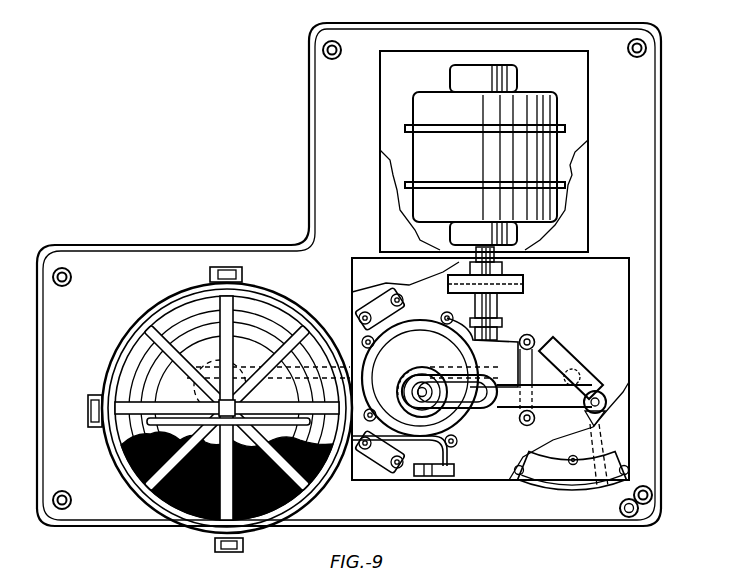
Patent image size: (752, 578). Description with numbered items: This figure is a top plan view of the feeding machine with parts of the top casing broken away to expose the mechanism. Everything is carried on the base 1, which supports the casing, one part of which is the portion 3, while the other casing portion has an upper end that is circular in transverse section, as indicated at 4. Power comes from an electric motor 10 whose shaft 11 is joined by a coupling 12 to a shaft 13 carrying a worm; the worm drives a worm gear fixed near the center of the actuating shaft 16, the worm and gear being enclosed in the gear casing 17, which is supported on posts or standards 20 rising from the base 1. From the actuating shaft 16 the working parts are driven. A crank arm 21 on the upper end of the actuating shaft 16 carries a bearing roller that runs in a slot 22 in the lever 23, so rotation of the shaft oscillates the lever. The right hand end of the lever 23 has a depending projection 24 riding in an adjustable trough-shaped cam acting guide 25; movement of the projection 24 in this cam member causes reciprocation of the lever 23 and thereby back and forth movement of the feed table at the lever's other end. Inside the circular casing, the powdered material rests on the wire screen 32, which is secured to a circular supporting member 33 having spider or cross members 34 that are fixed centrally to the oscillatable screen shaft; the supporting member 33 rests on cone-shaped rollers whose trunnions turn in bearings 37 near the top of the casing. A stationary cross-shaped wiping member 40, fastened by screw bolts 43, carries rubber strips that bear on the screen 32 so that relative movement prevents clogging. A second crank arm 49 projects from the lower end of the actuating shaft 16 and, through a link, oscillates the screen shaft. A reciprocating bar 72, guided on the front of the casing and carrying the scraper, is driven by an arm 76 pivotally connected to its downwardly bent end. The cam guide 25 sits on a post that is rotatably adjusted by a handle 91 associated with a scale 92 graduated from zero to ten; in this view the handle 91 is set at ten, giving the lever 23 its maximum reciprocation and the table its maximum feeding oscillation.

The base 1 is at (330, 178).
The casing portion 3 is at (633, 313).
The circular upper end of casing portion 4 is at (164, 302).
The electric motor 10 is at (484, 151).
The motor shaft 11 is at (521, 263).
The coupling 12 is at (525, 285).
The shaft 13 is at (500, 316).
The actuating shaft 16 is at (432, 368).
The gear casing 17 is at (447, 314).
The posts or standards 20 is at (352, 304).
The crank arm 21 is at (419, 370).
The slot 22 is at (464, 392).
The lever 23 is at (540, 408).
The depending projection 24 is at (603, 387).
The trough-shaped cam acting guide 25 is at (575, 357).
The screen 32 is at (190, 528).
The circular supporting member 33 is at (132, 367).
The spider or cross members 34 is at (193, 370).
The bearings 37 is at (211, 272).
The wiping member 40 is at (238, 318).
The screw bolts 43 is at (238, 270).
The crank arm 49 is at (405, 372).
The reciprocating bar 72 is at (450, 457).
The arm 76 is at (434, 485).
The handle 91 is at (629, 518).
The scale 92 is at (541, 497).